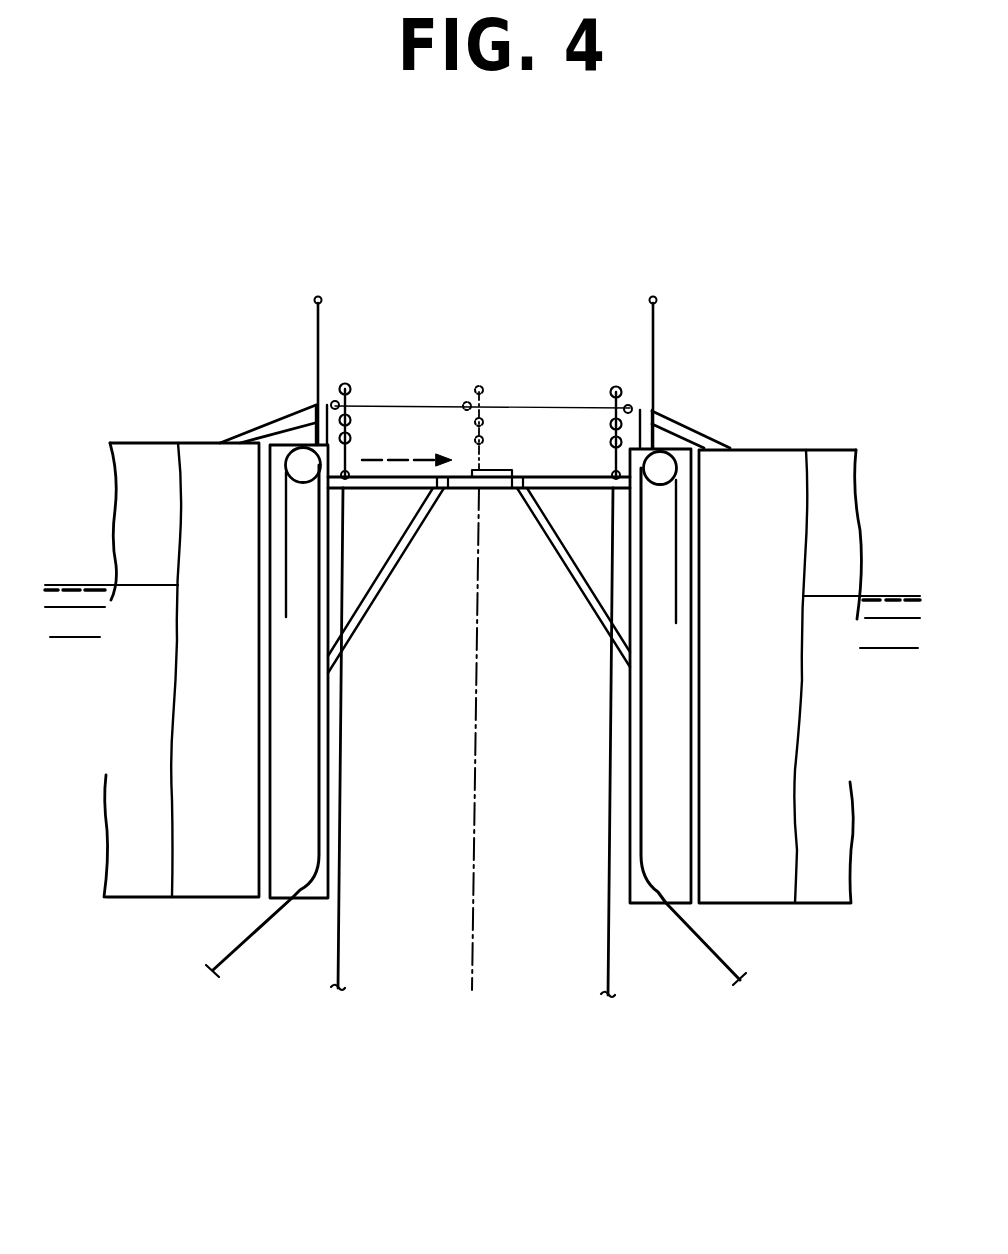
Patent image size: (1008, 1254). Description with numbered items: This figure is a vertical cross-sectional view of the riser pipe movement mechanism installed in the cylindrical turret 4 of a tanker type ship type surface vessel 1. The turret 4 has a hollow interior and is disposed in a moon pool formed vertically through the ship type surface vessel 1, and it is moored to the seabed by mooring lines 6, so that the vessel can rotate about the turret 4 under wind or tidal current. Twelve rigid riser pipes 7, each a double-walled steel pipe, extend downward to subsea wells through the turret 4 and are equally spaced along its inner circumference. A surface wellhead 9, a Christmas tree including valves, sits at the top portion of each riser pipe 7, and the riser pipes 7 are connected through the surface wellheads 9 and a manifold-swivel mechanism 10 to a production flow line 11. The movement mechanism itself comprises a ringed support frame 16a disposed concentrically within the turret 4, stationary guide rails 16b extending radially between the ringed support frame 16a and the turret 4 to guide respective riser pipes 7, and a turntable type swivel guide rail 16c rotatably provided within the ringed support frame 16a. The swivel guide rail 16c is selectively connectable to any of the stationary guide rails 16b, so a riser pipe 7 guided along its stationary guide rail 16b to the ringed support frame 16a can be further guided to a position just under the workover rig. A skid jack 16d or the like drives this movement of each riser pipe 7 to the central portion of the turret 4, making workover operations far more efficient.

The ship type surface vessel 1 is at (775, 450).
The cylindrical turret 4 is at (278, 767).
The mooring lines 6 is at (240, 948).
The riser pipe 7 is at (340, 966).
The surface wellhead 9 is at (348, 425).
The manifold-swivel mechanism 10 is at (311, 431).
The production flow line 11 is at (319, 319).
The ringed support frame 16a is at (444, 490).
The stationary guide rails 16b is at (395, 480).
The swivel guide rail 16c is at (498, 489).
The skid jack 16d is at (490, 468).